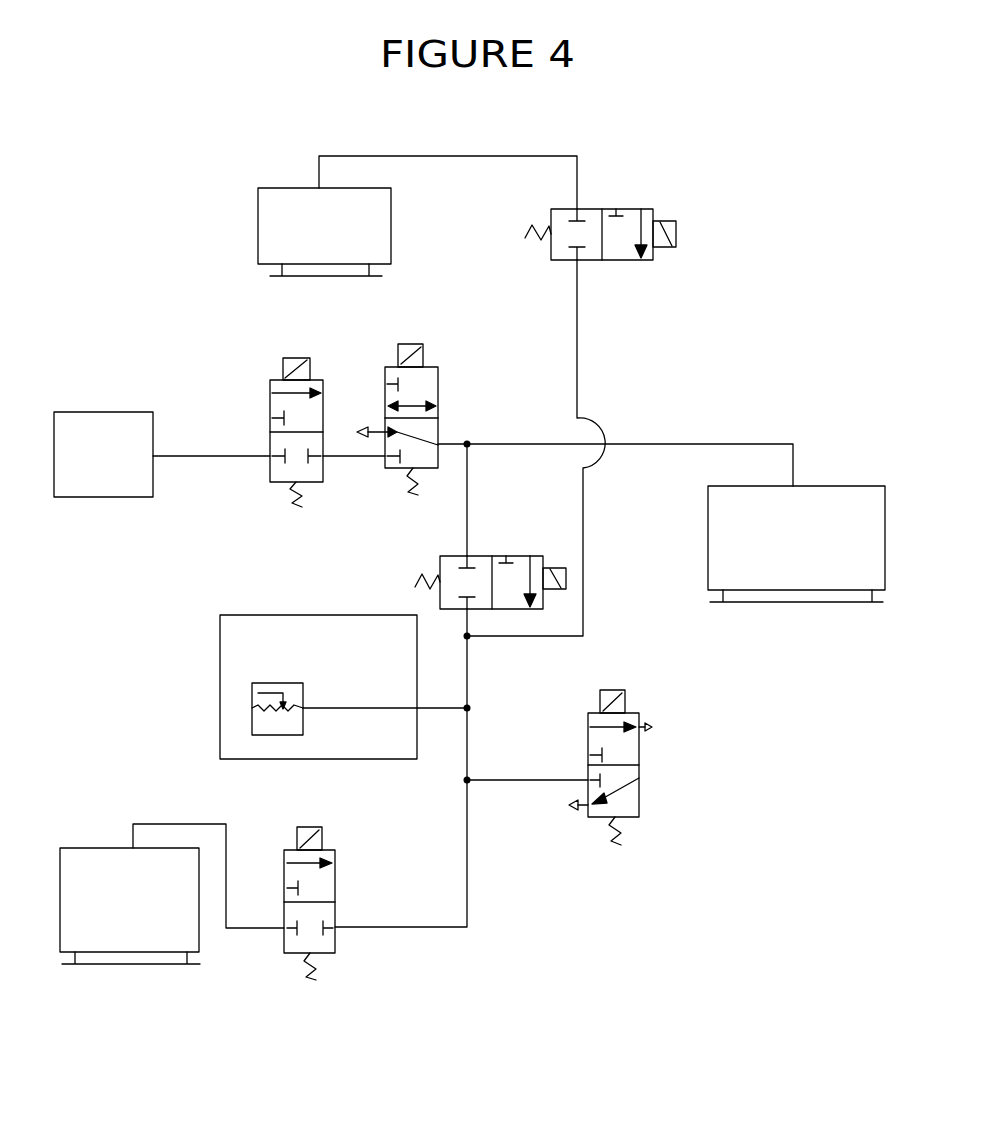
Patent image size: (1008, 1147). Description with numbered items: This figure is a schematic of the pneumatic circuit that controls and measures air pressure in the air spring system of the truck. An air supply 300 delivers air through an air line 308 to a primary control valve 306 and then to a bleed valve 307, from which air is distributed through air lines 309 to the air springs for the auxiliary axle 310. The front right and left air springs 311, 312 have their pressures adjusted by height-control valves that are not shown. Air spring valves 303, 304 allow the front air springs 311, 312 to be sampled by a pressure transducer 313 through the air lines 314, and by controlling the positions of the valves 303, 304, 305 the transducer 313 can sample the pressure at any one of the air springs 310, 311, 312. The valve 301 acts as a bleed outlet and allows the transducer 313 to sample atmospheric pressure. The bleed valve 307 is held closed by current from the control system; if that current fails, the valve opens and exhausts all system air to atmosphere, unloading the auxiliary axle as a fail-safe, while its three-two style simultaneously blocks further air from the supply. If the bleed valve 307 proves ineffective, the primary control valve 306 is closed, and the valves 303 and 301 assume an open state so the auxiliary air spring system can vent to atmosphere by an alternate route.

The air supply 300 is at (103, 402).
The valve 301 is at (650, 768).
The air spring valve 303 is at (503, 545).
The air spring valve 304 is at (600, 200).
The valve 305 is at (340, 895).
The primary control valve 306 is at (260, 437).
The bleed valve 307 is at (450, 412).
The air line 308 is at (185, 466).
The air lines 309 is at (632, 437).
The air springs for the auxiliary axle 310 is at (826, 472).
The front right air spring 311 is at (403, 238).
The front left air spring 312 is at (86, 840).
The pressure transducer 313 is at (262, 605).
The air lines 314 is at (478, 905).